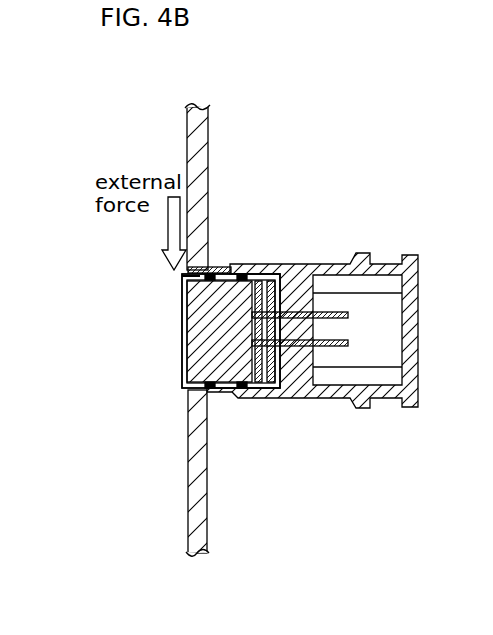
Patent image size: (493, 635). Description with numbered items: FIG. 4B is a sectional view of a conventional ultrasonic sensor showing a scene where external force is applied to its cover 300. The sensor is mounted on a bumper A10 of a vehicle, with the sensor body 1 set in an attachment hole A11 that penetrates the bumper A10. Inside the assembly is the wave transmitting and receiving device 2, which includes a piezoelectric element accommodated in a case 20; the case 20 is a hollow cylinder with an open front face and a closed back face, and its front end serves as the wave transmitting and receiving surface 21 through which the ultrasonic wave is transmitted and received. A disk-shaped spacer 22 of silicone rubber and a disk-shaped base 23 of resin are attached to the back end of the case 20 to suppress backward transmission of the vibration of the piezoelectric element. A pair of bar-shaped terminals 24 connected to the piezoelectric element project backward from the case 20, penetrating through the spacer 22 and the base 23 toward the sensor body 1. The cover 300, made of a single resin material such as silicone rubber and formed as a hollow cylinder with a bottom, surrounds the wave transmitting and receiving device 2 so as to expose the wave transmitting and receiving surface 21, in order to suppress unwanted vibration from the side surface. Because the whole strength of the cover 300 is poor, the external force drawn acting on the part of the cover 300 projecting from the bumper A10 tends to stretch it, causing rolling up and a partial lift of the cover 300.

The sensor body 1 is at (422, 281).
The wave transmitting and receiving device 2 is at (198, 350).
The case 20 is at (200, 338).
The wave transmitting and receiving surface 21 is at (182, 306).
The spacer 22 is at (250, 338).
The base 23 is at (262, 360).
The terminals 24 is at (350, 315).
The cover 300 is at (179, 280).
The bumper A10 is at (197, 133).
The attachment hole A11 is at (213, 270).